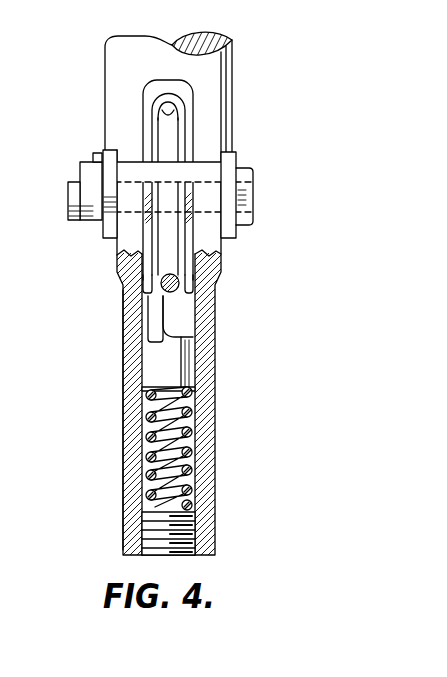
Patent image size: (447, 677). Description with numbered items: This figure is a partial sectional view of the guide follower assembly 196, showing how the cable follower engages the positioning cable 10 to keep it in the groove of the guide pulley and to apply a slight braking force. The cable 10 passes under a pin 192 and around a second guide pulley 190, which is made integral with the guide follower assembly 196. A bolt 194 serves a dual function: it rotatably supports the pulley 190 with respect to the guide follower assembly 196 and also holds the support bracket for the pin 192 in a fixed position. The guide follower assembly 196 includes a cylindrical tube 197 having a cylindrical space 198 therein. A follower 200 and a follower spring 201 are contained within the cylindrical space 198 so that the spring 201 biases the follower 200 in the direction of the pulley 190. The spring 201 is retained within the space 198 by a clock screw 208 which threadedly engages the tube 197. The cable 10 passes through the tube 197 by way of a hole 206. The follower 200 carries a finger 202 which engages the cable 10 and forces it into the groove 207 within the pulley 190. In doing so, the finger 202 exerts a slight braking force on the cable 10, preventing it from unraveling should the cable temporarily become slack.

The cable 10 is at (160, 285).
The second guide pulley 190 is at (150, 128).
The pin 192 is at (205, 160).
The bolt 194 is at (250, 188).
The guide follower assembly 196 is at (123, 386).
The cylindrical tube 197 is at (123, 469).
The cylindrical space 198 is at (147, 430).
The follower 200 is at (188, 348).
The follower spring 201 is at (190, 410).
The finger 202 is at (155, 312).
The hole 206 is at (185, 302).
The groove 207 is at (172, 106).
The clock screw 208 is at (190, 533).